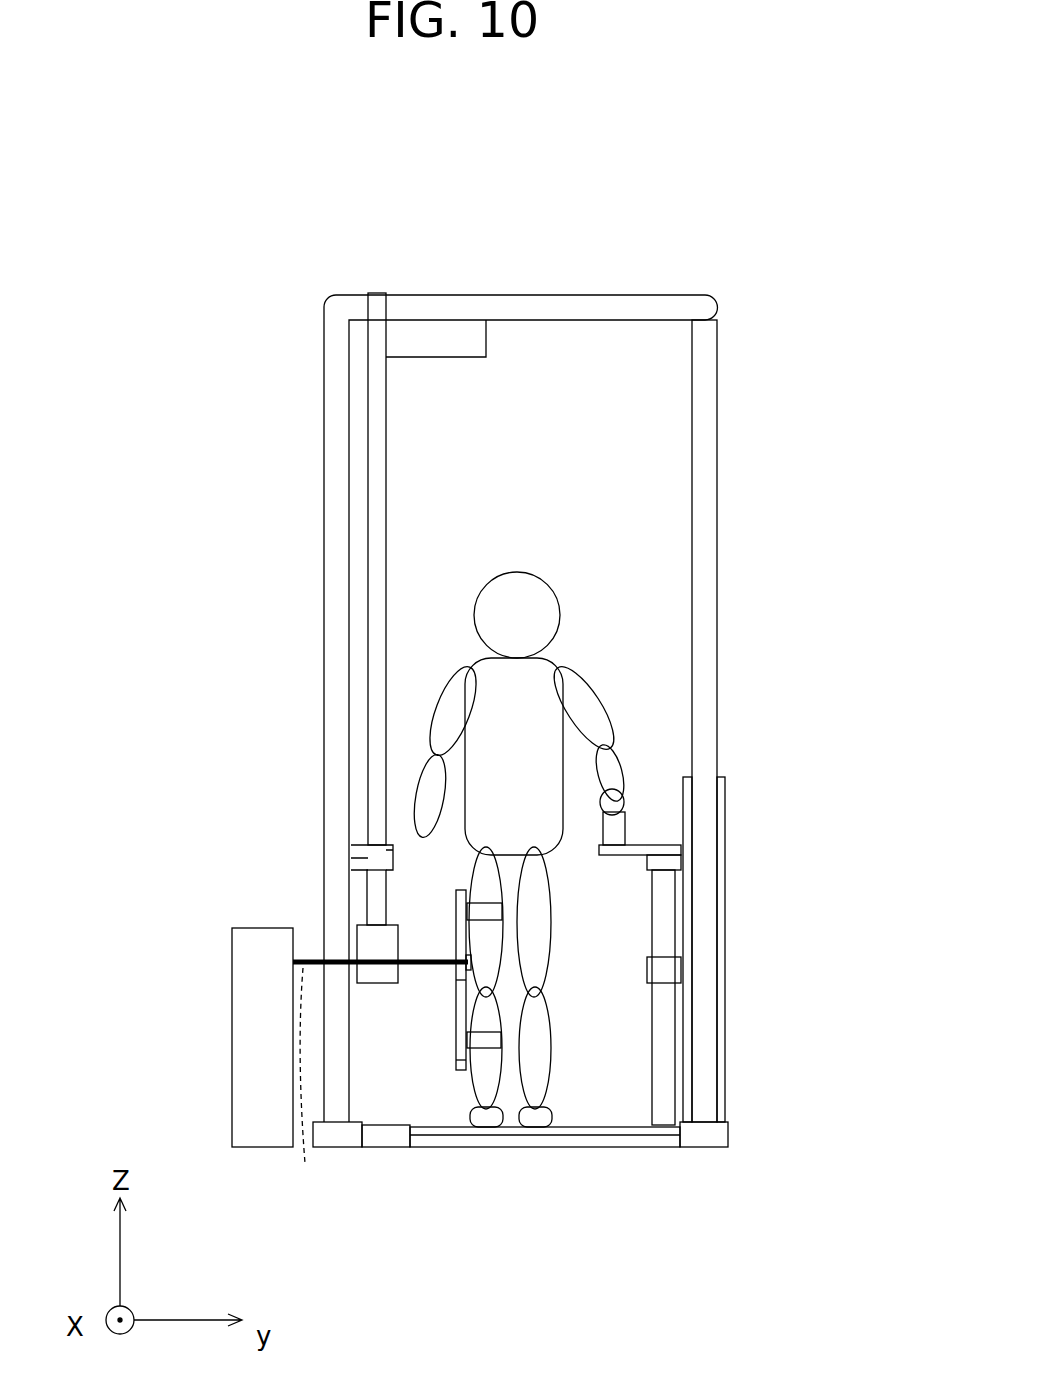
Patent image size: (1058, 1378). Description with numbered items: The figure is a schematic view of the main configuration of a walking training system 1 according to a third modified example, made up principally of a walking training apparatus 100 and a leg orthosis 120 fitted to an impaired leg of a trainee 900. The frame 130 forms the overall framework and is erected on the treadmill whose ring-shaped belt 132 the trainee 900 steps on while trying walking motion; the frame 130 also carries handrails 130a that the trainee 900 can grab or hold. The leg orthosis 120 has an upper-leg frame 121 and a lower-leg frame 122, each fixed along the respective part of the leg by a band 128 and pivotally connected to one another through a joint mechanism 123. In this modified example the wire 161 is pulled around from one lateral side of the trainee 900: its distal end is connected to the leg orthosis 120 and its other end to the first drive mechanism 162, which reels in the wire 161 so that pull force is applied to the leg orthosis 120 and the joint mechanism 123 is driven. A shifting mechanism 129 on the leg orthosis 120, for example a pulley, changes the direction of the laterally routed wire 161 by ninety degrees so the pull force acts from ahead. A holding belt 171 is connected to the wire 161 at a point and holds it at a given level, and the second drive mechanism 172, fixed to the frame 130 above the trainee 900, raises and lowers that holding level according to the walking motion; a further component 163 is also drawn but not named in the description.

The walking training system 1 is at (87, 214).
The walking training apparatus 100 is at (724, 177).
The leg orthosis 120 is at (378, 948).
The upper-leg frame 121 is at (441, 939).
The lower-leg frame 122 is at (452, 1064).
The joint mechanism 123 is at (463, 983).
The band 128 is at (496, 908).
The shifting mechanism 129 is at (453, 972).
The frame 130 is at (638, 309).
The handrail 130a is at (627, 801).
The belt 132 is at (582, 1149).
The wire 161 is at (294, 1094).
The first drive mechanism 162 is at (232, 968).
The pulley bracket 163 is at (354, 913).
The holding belt 171 is at (369, 648).
The second drive mechanism 172 is at (465, 334).
The trainee 900 is at (541, 578).